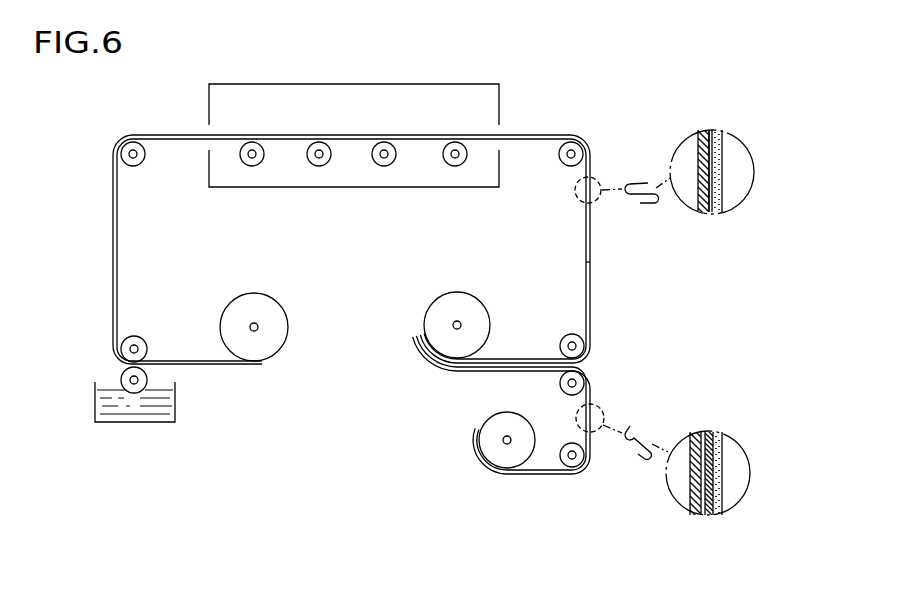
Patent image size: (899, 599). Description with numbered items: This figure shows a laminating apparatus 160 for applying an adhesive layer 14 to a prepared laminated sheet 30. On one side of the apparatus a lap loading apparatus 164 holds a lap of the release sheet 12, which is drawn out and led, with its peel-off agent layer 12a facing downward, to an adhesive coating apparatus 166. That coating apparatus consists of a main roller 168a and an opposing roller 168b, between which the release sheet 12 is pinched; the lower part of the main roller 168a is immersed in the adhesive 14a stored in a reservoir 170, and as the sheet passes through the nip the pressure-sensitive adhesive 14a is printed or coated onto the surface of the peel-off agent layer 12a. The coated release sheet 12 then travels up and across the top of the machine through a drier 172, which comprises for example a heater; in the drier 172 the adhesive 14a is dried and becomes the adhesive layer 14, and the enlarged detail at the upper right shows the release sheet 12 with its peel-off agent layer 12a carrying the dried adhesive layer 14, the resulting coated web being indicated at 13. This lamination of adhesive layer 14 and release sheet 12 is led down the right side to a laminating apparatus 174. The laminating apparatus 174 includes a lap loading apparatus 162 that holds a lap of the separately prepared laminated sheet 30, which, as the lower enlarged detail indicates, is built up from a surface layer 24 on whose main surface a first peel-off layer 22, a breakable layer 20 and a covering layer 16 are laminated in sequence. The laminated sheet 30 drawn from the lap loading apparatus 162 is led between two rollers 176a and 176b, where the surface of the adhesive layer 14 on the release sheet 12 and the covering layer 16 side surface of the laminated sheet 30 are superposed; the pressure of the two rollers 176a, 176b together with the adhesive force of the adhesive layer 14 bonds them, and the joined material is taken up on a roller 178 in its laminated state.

The laminating apparatus 160 is at (487, 30).
The drier 172 is at (274, 81).
The release sheet 12 is at (119, 231).
The peel-off agent layer 12a is at (712, 212).
The adhesive layer 14 is at (590, 262).
The adhesive 14a is at (152, 414).
The coated web 13 is at (585, 255).
The lap loading apparatus 164 is at (258, 331).
The adhesive coating apparatus 166 is at (146, 341).
The main roller 168a is at (152, 369).
The roller 168b is at (137, 347).
The reservoir 170 is at (95, 413).
The roller 178 is at (459, 329).
The roller 176a is at (565, 336).
The roller 176b is at (560, 380).
The laminating apparatus 174 is at (603, 366).
The lap loading apparatus 162 is at (507, 447).
The covering layer 16 is at (595, 453).
The surface layer 24 is at (691, 494).
The first peel-off layer 22 is at (700, 516).
The breakable layer 20 is at (709, 516).
The laminated sheet 30 is at (596, 397).